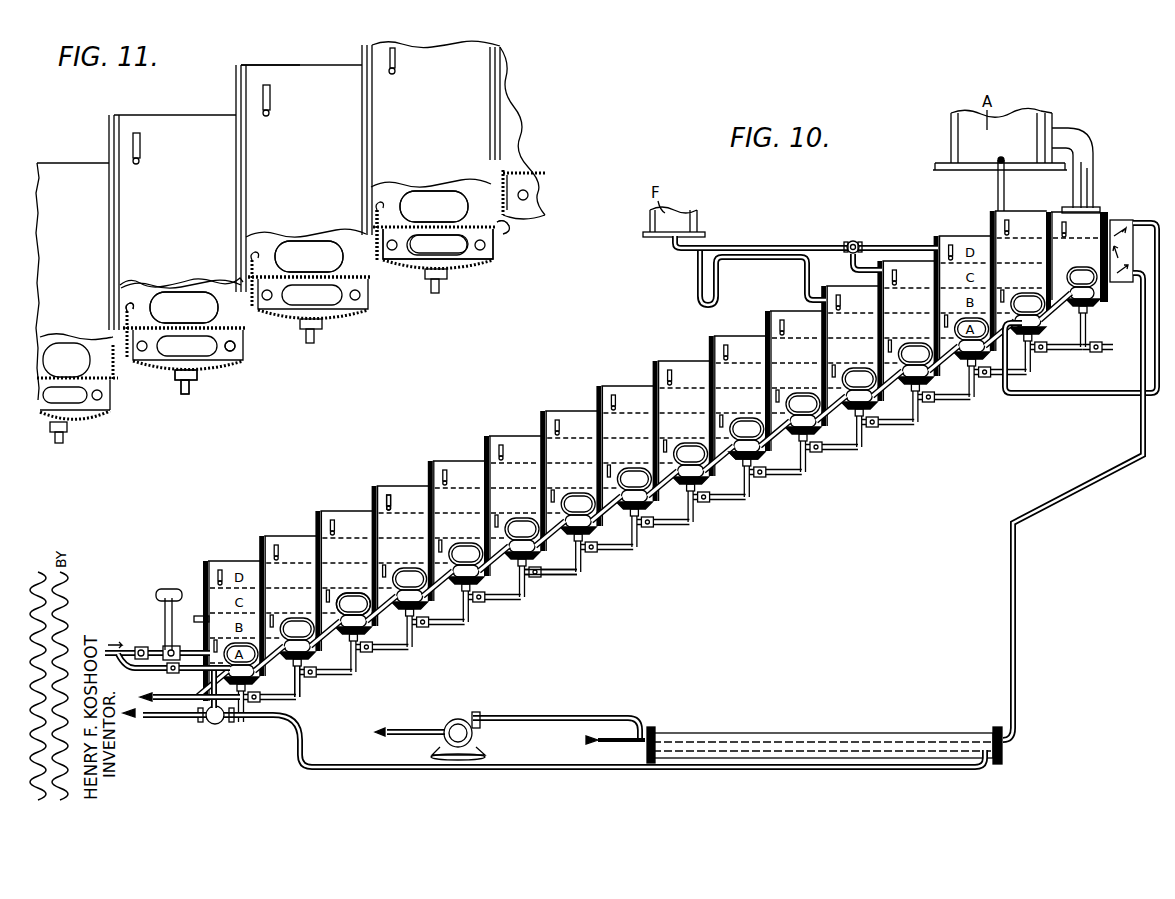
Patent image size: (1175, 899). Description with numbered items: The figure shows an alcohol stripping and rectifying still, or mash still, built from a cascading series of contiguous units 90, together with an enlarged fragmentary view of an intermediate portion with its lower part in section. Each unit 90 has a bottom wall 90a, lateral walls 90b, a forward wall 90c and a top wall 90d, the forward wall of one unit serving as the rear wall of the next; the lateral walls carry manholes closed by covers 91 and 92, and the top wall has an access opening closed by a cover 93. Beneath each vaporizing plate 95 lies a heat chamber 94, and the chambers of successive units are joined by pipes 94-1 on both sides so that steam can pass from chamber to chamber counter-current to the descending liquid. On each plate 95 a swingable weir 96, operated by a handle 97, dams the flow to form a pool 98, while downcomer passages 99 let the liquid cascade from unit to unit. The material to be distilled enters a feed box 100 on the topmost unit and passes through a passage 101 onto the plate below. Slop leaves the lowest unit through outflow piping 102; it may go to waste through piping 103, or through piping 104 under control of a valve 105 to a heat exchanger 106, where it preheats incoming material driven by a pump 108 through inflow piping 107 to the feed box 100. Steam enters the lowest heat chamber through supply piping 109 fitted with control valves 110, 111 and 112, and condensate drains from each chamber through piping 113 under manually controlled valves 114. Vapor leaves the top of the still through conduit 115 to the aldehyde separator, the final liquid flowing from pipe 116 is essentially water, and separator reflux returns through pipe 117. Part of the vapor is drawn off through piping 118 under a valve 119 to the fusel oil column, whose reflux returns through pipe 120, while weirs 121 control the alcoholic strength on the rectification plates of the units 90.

In FIG. 11, the unit 90 is at (207, 133).
In FIG. 10, the unit 90 is at (296, 530).
In FIG. 11, the bottom wall 90a is at (207, 370).
In FIG. 11, the lateral walls 90b is at (309, 242).
In FIG. 11, the forward wall 90c is at (108, 183).
In FIG. 10, the forward wall 90c is at (557, 406).
In FIG. 10, the top wall 90d is at (462, 462).
In FIG. 11, the manhole cover 91 is at (425, 250).
In FIG. 11, the manhole cover 92 is at (423, 210).
In FIG. 11, the access opening cover 93 is at (300, 65).
In FIG. 10, the access opening cover 93 is at (512, 438).
In FIG. 11, the heat chamber 94 is at (468, 252).
In FIG. 11, the pipes 94-1 is at (236, 345).
In FIG. 10, the pipes 94-1 is at (742, 470).
In FIG. 11, the vaporizing plate 95 is at (173, 327).
In FIG. 11, the weir 96 is at (140, 302).
In FIG. 10, the handle 97 is at (338, 596).
In FIG. 11, the pool 98 is at (368, 235).
In FIG. 11, the downcomer passage 99 is at (503, 233).
In FIG. 10, the feed box 100 is at (1128, 285).
In FIG. 10, the passage 101 is at (1103, 273).
In FIG. 10, the outflow piping 102 is at (213, 672).
In FIG. 10, the piping 103 is at (168, 722).
In FIG. 10, the piping 104 is at (560, 769).
In FIG. 10, the valve 105 is at (212, 725).
In FIG. 10, the heat exchanger 106 is at (818, 740).
In FIG. 10, the inflow piping 107 is at (400, 725).
In FIG. 10, the pump 108 is at (453, 720).
In FIG. 10, the supply piping 109 is at (120, 665).
In FIG. 10, the control valve 110 is at (173, 675).
In FIG. 10, the control valve 111 is at (147, 646).
In FIG. 10, the control valve 112 is at (158, 600).
In FIG. 11, the piping 113 is at (183, 395).
In FIG. 10, the piping 113 is at (343, 690).
In FIG. 10, the valve 114 is at (548, 578).
In FIG. 10, the conduit 115 is at (1088, 192).
In FIG. 10, the pipe 116 is at (200, 615).
In FIG. 10, the pipe 117 is at (997, 190).
In FIG. 10, the piping 118 is at (868, 268).
In FIG. 10, the valve 119 is at (852, 240).
In FIG. 10, the pipe 120 is at (805, 279).
In FIG. 11, the weir 121 is at (142, 150).
In FIG. 10, the weir 121 is at (393, 501).